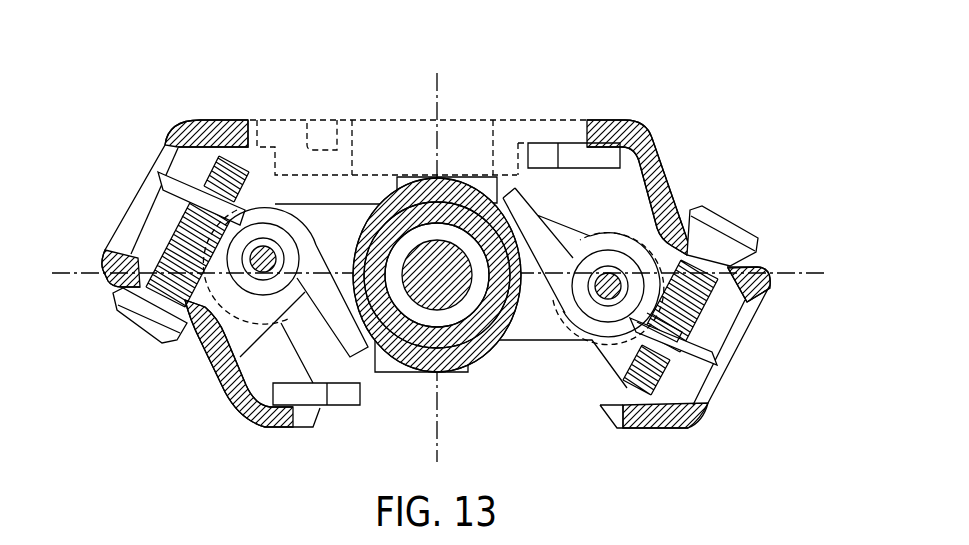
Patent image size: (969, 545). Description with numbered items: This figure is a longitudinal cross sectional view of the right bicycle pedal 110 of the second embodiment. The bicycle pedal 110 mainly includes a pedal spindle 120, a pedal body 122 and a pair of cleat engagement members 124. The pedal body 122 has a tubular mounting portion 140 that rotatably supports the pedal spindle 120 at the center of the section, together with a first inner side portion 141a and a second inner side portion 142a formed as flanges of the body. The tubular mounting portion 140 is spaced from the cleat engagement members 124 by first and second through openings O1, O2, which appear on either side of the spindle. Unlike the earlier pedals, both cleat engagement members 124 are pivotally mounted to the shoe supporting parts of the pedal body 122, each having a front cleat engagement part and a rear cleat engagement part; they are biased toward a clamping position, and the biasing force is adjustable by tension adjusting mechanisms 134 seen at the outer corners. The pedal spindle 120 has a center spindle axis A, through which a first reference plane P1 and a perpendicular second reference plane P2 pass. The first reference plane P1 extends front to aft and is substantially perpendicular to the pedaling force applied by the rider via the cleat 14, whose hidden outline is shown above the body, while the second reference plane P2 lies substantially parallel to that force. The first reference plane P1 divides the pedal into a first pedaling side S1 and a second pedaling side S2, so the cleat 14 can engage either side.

The bicycle pedal 110 is at (418, 220).
The cleat engagement member 124 is at (681, 177).
The tension adjusting mechanism 134 is at (153, 237).
The cleat 14 is at (458, 117).
The pedal body 122 is at (472, 175).
The tubular mounting portion 140 is at (390, 200).
The pedal spindle 120 is at (443, 312).
The second inner side portion 142a is at (274, 410).
The first inner side portion 141a is at (533, 347).
The first through opening O1 is at (572, 213).
The second through opening O2 is at (332, 232).
The first reference plane P1 is at (813, 272).
The second reference plane P2 is at (437, 85).
The first pedaling side S1 is at (352, 87).
The second pedaling side S2 is at (377, 412).
The center spindle axis A is at (437, 277).